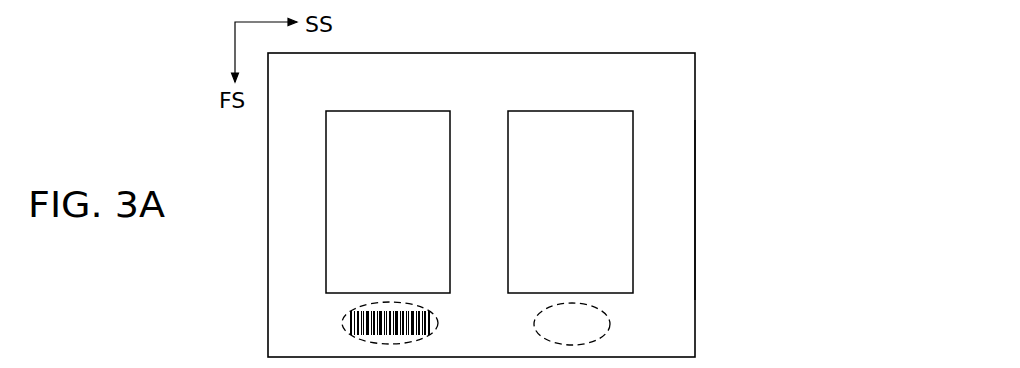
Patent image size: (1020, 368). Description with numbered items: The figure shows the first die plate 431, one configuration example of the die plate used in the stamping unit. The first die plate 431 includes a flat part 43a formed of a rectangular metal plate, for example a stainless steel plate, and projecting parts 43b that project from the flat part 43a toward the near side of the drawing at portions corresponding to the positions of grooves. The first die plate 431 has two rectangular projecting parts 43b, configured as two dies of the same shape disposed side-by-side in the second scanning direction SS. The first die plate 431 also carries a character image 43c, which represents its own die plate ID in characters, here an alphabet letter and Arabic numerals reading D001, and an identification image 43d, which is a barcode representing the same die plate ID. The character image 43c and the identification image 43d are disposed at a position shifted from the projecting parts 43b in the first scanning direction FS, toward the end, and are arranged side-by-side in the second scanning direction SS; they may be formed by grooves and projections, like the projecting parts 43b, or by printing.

The first die plate 431 is at (757, 95).
The flat part 43a is at (683, 199).
The projecting parts 43b is at (633, 261).
The character image 43c is at (610, 324).
The identification image 43d is at (342, 323).